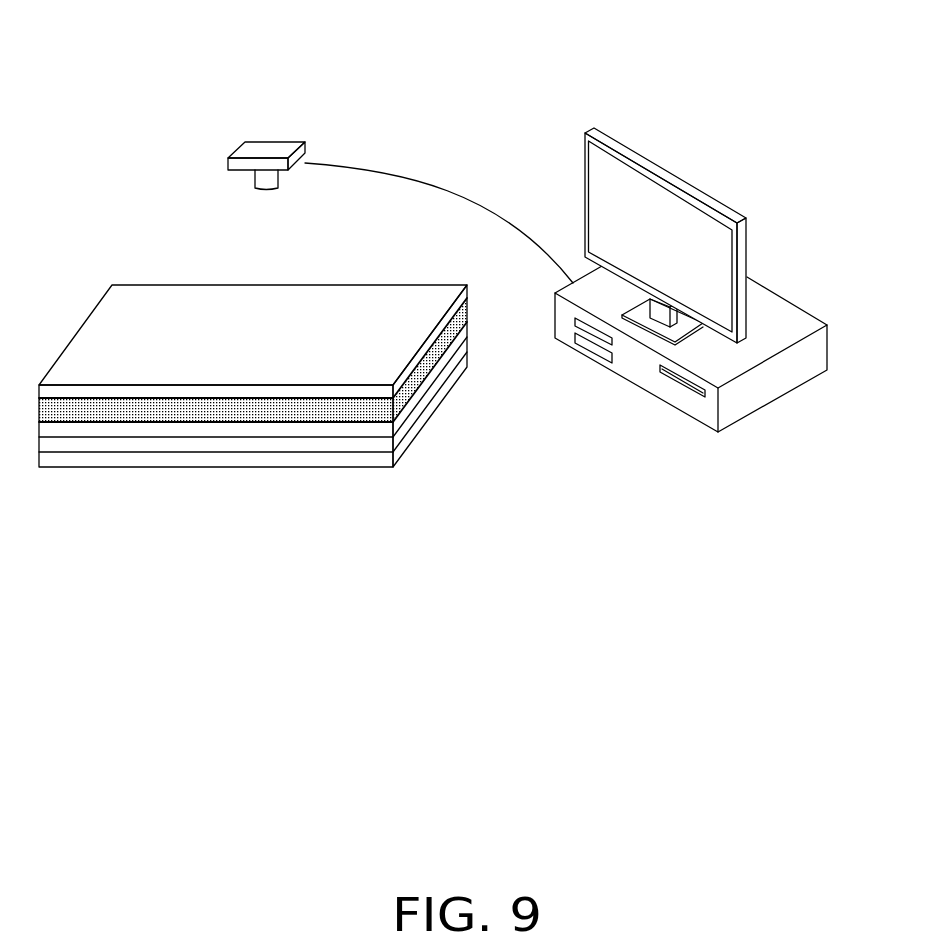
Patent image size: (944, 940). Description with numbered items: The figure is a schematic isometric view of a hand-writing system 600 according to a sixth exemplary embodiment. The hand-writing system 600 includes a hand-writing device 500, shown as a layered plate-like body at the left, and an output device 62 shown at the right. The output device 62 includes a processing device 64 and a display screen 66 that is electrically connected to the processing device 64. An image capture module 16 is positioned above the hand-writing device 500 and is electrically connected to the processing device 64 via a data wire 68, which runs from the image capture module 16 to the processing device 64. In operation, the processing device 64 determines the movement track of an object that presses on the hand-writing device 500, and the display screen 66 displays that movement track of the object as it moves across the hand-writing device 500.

The hand-writing system 600 is at (435, 30).
The hand-writing device 500 is at (144, 216).
The image capture module 16 is at (250, 148).
The data wire 68 is at (407, 173).
The output device 62 is at (725, 280).
The display screen 66 is at (720, 248).
The processing device 64 is at (770, 313).